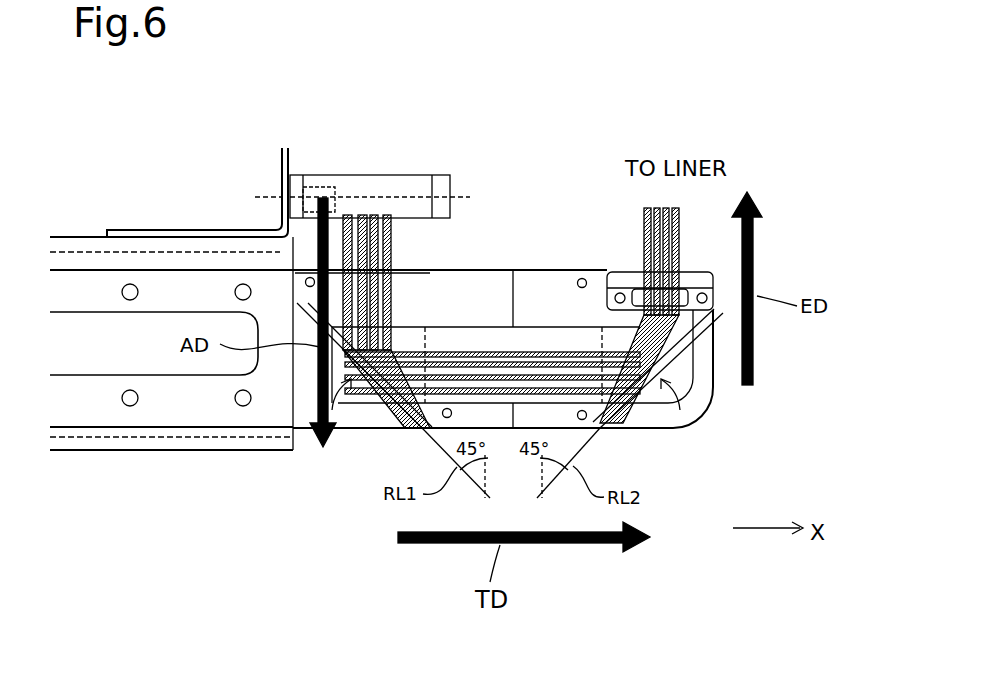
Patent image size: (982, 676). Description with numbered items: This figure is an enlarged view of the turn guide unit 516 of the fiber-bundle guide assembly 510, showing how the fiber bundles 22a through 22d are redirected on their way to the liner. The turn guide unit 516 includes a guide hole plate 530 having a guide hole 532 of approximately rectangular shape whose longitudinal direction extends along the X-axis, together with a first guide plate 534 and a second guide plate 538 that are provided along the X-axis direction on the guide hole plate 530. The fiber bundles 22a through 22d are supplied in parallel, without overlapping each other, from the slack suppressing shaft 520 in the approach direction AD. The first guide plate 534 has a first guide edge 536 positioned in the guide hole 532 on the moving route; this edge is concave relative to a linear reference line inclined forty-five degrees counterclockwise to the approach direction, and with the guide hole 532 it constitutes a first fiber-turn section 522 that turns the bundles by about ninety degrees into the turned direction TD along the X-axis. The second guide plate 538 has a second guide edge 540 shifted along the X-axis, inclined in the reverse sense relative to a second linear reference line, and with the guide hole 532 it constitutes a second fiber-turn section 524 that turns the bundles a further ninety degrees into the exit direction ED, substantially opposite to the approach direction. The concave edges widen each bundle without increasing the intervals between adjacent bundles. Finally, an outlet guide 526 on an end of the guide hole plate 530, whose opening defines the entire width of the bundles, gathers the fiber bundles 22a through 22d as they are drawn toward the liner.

The fiber-bundle guide assembly 510 is at (104, 157).
The turn guide unit 516 is at (518, 240).
The slack suppressing shaft 520 is at (432, 173).
The fiber bundle 22a is at (388, 212).
The fiber bundle 22d is at (385, 155).
The first fiber-turn section 522 is at (313, 427).
The second fiber-turn section 524 is at (700, 398).
The outlet guide 526 is at (627, 268).
The guide hole plate 530 is at (645, 420).
The guide hole 532 is at (673, 422).
The first guide plate 534 is at (470, 283).
The first guide edge 536 is at (405, 416).
The second guide plate 538 is at (558, 269).
The second guide edge 540 is at (612, 420).